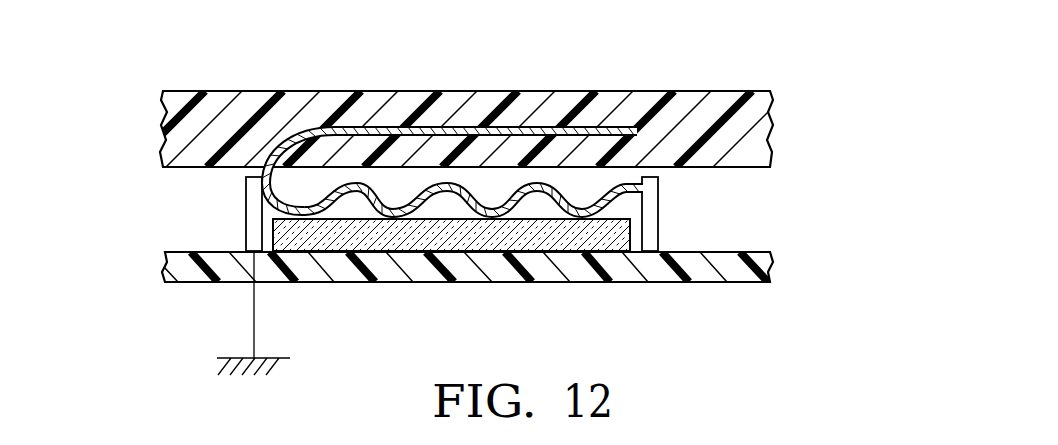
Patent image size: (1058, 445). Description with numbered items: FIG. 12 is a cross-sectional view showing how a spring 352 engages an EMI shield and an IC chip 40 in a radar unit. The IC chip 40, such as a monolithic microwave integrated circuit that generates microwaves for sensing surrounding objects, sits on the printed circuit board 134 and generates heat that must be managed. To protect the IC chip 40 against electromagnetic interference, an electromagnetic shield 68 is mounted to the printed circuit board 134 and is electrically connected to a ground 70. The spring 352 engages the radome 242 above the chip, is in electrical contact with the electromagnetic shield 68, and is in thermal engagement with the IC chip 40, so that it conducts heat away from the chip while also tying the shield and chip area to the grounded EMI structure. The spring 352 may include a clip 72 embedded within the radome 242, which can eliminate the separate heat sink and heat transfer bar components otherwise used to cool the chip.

The radome 242 is at (690, 97).
The printed circuit board 134 is at (192, 278).
The IC chip 40 is at (521, 240).
The electromagnetic shield 68 is at (653, 220).
The clip 72 is at (520, 125).
The spring 352 is at (387, 195).
The ground 70 is at (278, 358).